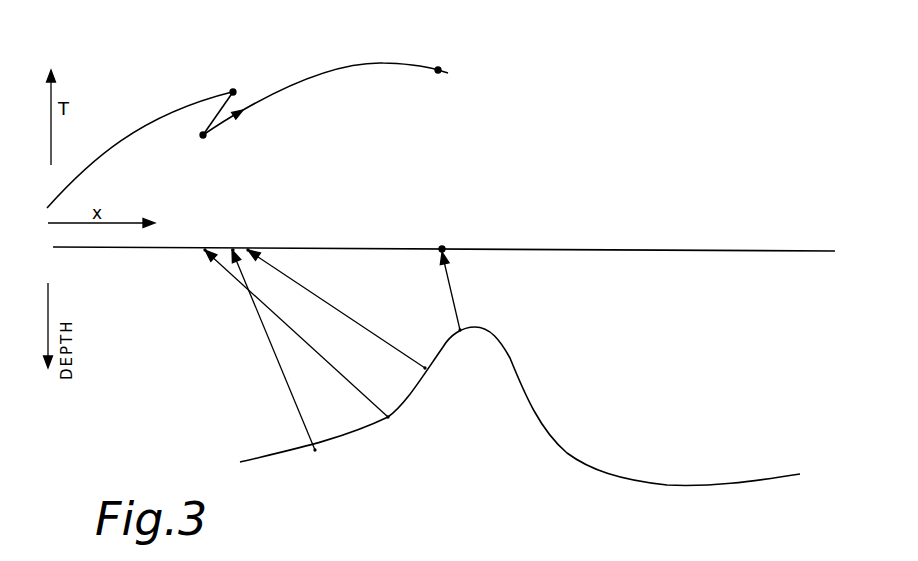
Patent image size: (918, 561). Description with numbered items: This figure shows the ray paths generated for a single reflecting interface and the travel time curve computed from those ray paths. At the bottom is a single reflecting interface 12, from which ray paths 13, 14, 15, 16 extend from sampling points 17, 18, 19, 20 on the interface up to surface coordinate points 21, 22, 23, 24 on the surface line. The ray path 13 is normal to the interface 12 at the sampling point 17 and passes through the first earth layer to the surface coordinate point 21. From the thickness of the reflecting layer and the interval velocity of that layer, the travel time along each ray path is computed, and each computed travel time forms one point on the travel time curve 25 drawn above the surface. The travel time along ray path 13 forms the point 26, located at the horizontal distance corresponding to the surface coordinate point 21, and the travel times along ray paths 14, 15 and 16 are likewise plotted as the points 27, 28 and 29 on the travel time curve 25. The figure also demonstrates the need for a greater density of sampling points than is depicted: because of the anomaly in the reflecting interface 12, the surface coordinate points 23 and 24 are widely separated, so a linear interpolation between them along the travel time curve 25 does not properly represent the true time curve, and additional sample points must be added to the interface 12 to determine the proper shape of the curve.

The reflecting interface 12 is at (538, 408).
The ray path 13 is at (283, 380).
The ray path 14 is at (332, 363).
The ray path 15 is at (342, 312).
The ray path 16 is at (455, 284).
The sampling point 17 is at (317, 452).
The sampling point 18 is at (390, 419).
The sampling point 19 is at (426, 370).
The sampling point 20 is at (462, 333).
The surface coordinate point 21 is at (233, 250).
The surface coordinate point 22 is at (205, 250).
The surface coordinate point 23 is at (246, 248).
The surface coordinate point 24 is at (443, 247).
The travel time curve 25 is at (171, 118).
The point on travel time curve 26 is at (233, 92).
The point on travel time curve 27 is at (203, 135).
The point on travel time curve 28 is at (245, 112).
The point on travel time curve 29 is at (438, 70).